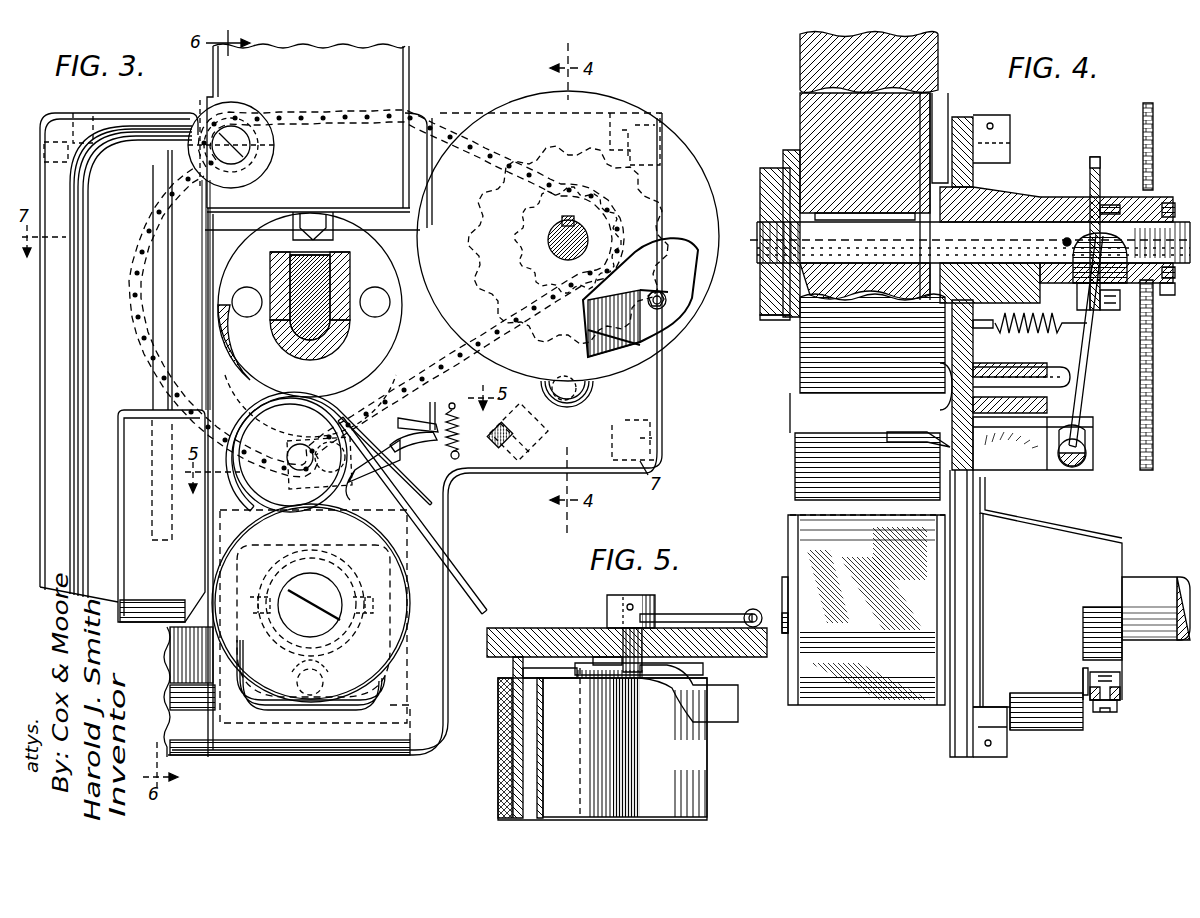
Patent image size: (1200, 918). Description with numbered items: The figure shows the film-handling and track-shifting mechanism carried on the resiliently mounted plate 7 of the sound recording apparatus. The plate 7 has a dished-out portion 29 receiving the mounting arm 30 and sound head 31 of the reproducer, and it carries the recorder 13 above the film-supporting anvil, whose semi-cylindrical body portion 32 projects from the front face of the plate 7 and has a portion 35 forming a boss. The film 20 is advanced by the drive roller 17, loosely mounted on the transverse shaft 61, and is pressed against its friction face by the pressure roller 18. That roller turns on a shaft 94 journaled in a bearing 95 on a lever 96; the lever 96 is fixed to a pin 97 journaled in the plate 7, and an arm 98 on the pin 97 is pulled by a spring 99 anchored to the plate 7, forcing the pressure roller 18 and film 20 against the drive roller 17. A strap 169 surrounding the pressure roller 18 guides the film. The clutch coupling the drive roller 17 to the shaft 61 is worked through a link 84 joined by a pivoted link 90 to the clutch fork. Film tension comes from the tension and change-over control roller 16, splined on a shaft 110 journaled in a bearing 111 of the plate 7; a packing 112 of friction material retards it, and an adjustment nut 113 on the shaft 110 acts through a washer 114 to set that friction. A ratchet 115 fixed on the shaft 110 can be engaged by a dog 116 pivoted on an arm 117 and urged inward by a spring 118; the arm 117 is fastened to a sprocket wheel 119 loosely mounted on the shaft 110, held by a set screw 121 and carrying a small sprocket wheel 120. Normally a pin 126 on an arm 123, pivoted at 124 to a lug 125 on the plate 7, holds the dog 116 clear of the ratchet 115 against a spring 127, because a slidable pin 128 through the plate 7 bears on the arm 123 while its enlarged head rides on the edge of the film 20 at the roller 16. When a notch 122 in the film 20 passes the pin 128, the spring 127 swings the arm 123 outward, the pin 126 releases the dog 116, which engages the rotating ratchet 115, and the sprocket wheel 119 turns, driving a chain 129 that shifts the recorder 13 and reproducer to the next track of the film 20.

In FIG. 4, the plate 7 is at (968, 118).
In FIG. 5, the plate 7 is at (497, 630).
In FIG. 3, the recorder 13 is at (296, 162).
In FIG. 4, the tension and change-over control roller 16 is at (795, 383).
In FIG. 3, the drive roller 17 is at (395, 612).
In FIG. 4, the drive roller 17 is at (800, 705).
In FIG. 3, the pressure roller 18 is at (292, 468).
In FIG. 3, the film 20 is at (568, 231).
In FIG. 3, the dished out portion 29 is at (112, 560).
In FIG. 3, the mounting arm 30 is at (165, 160).
In FIG. 3, the sound head 31 is at (120, 351).
In FIG. 3, the body portion 32 is at (404, 356).
In FIG. 3, the boss 35 is at (342, 322).
In FIG. 4, the shaft 61 is at (1155, 577).
In FIG. 4, the link 84 is at (1120, 706).
In FIG. 4, the pivoted link 90 is at (1122, 684).
In FIG. 5, the shaft 94 is at (620, 745).
In FIG. 5, the bearing 95 is at (508, 737).
In FIG. 3, the lever 96 is at (432, 416).
In FIG. 4, the lever 96 is at (896, 432).
In FIG. 5, the lever 96 is at (700, 680).
In FIG. 5, the pin 97 is at (622, 622).
In FIG. 3, the arm 98 is at (450, 478).
In FIG. 5, the arm 98 is at (682, 614).
In FIG. 3, the spring 99 is at (458, 424).
In FIG. 5, the spring 99 is at (756, 608).
In FIG. 4, the shaft 110 is at (970, 242).
In FIG. 4, the bearing 111 is at (1010, 195).
In FIG. 4, the packing of friction material 112 is at (942, 170).
In FIG. 4, the adjustment nut 113 is at (775, 318).
In FIG. 4, the washer 114 is at (783, 150).
In FIG. 3, the ratchet 115 is at (630, 260).
In FIG. 4, the ratchet 115 is at (1096, 157).
In FIG. 3, the dog 116 is at (666, 300).
In FIG. 4, the dog 116 is at (1098, 341).
In FIG. 3, the arm 117 is at (600, 300).
In FIG. 4, the arm 117 is at (1105, 205).
In FIG. 3, the spring 118 is at (660, 327).
In FIG. 4, the sprocket wheel 119 is at (1143, 103).
In FIG. 4, the small sprocket wheel 120 is at (1170, 203).
In FIG. 4, the set screw 121 is at (1168, 295).
In FIG. 4, the notch 122 is at (876, 352).
In FIG. 3, the arm 123 is at (590, 341).
In FIG. 4, the arm 123 is at (1082, 372).
In FIG. 4, the pivot 124 is at (1082, 470).
In FIG. 4, the lug 125 is at (1093, 430).
In FIG. 4, the pin 126 is at (1060, 288).
In FIG. 4, the spring 127 is at (1030, 333).
In FIG. 3, the pin 128 is at (553, 438).
In FIG. 4, the pin 128 is at (1055, 377).
In FIG. 3, the chain 129 is at (420, 125).
In FIG. 3, the strap 169 is at (348, 414).